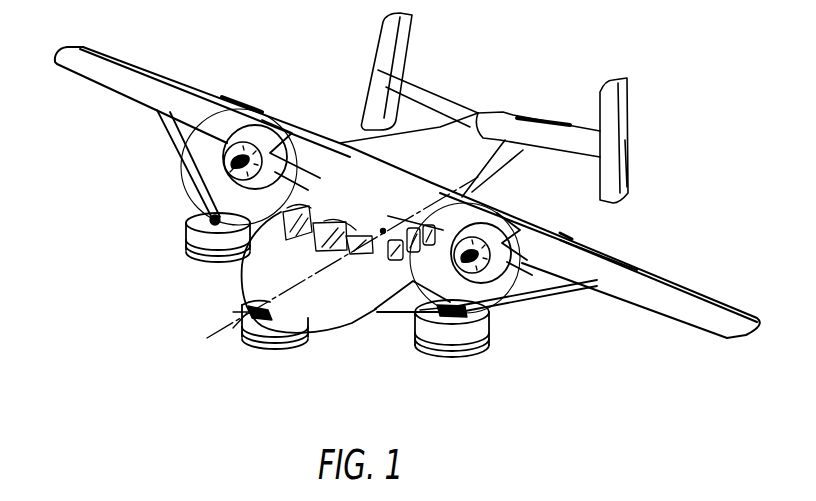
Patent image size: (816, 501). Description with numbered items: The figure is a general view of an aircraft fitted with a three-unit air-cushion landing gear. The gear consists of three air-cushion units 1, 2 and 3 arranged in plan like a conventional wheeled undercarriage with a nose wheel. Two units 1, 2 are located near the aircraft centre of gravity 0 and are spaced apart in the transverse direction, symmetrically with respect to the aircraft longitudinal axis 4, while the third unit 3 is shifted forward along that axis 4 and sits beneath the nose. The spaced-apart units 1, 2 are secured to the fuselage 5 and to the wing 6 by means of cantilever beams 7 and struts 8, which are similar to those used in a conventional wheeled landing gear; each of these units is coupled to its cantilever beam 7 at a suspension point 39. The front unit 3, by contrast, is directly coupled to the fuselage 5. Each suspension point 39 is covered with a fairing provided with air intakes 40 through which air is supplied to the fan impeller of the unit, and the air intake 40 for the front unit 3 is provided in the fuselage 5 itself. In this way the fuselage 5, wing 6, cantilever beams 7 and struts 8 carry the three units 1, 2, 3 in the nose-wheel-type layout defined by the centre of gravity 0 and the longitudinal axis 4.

The aircraft centre of gravity 0 is at (386, 229).
The air-cushion landing gear unit 1 is at (193, 228).
The air-cushion landing gear unit 2 is at (470, 335).
The front air-cushion landing gear unit 3 is at (281, 335).
The aircraft longitudinal axis 4 is at (233, 330).
The fuselage 5 is at (335, 320).
The wing 6 is at (647, 302).
The cantilever beam 7 is at (398, 300).
The strut 8 is at (171, 129).
The suspension point 39 is at (467, 310).
The air intake 40 is at (248, 309).